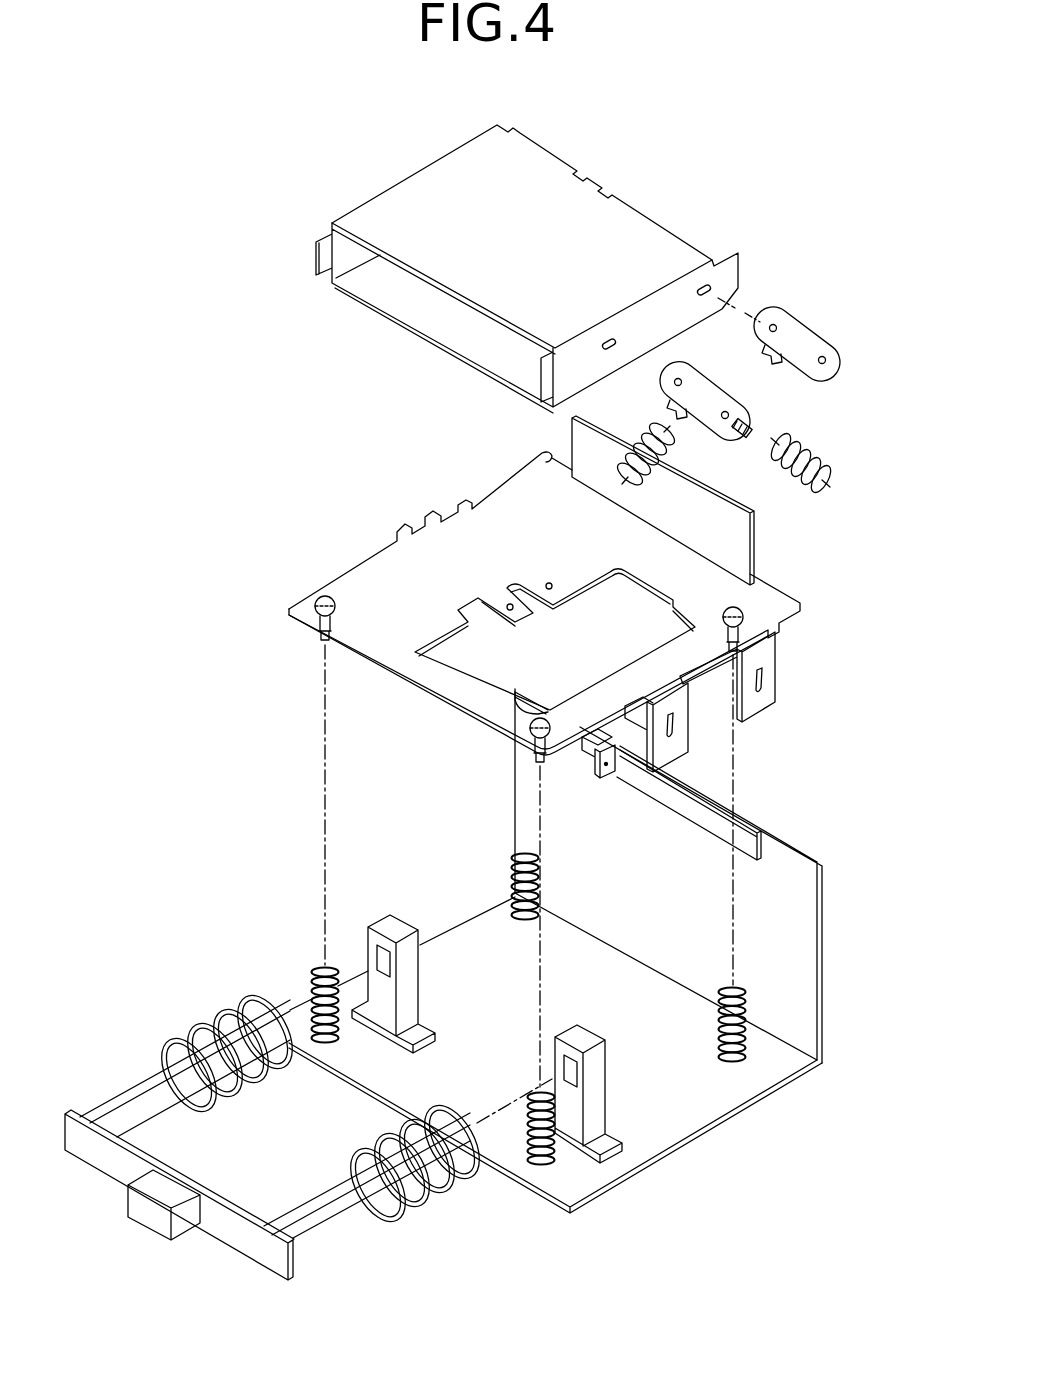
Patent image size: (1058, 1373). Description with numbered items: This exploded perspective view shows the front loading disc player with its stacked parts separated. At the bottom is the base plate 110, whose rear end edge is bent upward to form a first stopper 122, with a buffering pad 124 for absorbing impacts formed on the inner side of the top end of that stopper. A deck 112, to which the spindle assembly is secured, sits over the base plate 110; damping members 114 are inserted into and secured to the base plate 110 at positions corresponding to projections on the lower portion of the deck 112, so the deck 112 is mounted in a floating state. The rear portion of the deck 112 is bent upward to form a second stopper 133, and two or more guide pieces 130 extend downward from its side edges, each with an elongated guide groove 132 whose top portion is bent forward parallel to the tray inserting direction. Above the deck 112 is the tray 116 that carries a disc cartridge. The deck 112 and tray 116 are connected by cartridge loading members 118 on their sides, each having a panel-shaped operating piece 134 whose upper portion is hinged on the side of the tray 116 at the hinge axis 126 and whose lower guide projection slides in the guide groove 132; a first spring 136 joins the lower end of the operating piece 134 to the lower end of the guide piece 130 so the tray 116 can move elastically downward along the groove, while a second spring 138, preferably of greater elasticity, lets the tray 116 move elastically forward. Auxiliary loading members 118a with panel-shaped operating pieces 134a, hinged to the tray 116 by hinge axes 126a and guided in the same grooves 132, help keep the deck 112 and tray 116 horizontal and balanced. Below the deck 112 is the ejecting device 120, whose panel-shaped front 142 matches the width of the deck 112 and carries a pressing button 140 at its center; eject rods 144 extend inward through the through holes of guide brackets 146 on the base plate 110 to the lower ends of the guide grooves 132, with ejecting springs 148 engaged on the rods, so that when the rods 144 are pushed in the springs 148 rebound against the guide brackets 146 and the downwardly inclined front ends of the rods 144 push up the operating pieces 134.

The base plate 110 is at (660, 1117).
The deck 112 is at (375, 572).
The damping members 114 is at (760, 1087).
The tray 116 is at (400, 195).
The cartridge loading member 118 is at (668, 353).
The auxiliary loading member 118a is at (781, 291).
The ejecting device 120 is at (443, 1214).
The first stopper 122 is at (788, 962).
The buffering pad 124 is at (757, 838).
The slot 126 is at (607, 340).
The hinge axes 126a is at (712, 283).
The guide piece 130 is at (688, 723).
The elongated guide groove 132 is at (673, 737).
The second stopper 133 is at (715, 536).
The operating piece 134 is at (718, 398).
The operating piece 134a is at (803, 342).
The first spring 136 is at (828, 475).
The second spring 138 is at (622, 440).
The pressing button 140 is at (138, 1208).
The front 142 is at (225, 1230).
The eject rod 144 is at (335, 1220).
The guide bracket 146 is at (578, 1125).
The ejecting spring 148 is at (472, 1177).